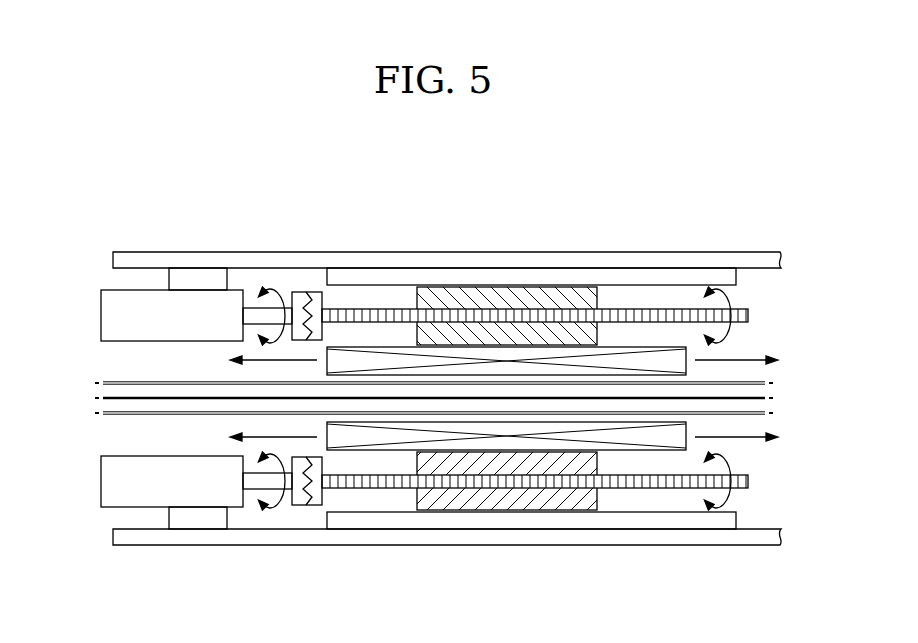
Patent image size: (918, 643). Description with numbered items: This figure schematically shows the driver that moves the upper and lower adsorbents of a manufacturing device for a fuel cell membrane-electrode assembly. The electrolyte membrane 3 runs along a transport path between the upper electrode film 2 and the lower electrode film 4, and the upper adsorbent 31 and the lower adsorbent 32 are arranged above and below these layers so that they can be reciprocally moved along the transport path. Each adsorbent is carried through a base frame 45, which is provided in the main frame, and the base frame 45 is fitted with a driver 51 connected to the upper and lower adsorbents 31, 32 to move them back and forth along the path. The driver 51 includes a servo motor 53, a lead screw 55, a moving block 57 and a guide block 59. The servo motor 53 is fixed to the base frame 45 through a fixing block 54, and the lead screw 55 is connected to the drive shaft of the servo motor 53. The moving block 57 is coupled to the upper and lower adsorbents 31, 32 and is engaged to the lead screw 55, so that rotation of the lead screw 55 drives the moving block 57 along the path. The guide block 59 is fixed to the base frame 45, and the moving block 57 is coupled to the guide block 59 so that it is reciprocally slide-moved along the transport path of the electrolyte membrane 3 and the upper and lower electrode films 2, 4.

The upper electrode film 2 is at (115, 383).
The electrolyte membrane 3 is at (105, 400).
The lower electrode film 4 is at (115, 413).
The upper adsorbent 31 is at (705, 369).
The lower adsorbent 32 is at (705, 429).
The base frame 45 is at (400, 257).
The driver 51 is at (762, 300).
The servo motor 53 is at (101, 315).
The fixing block 54 is at (231, 277).
The lead screw 55 is at (495, 295).
The moving block 57 is at (555, 297).
The guide block 59 is at (630, 277).